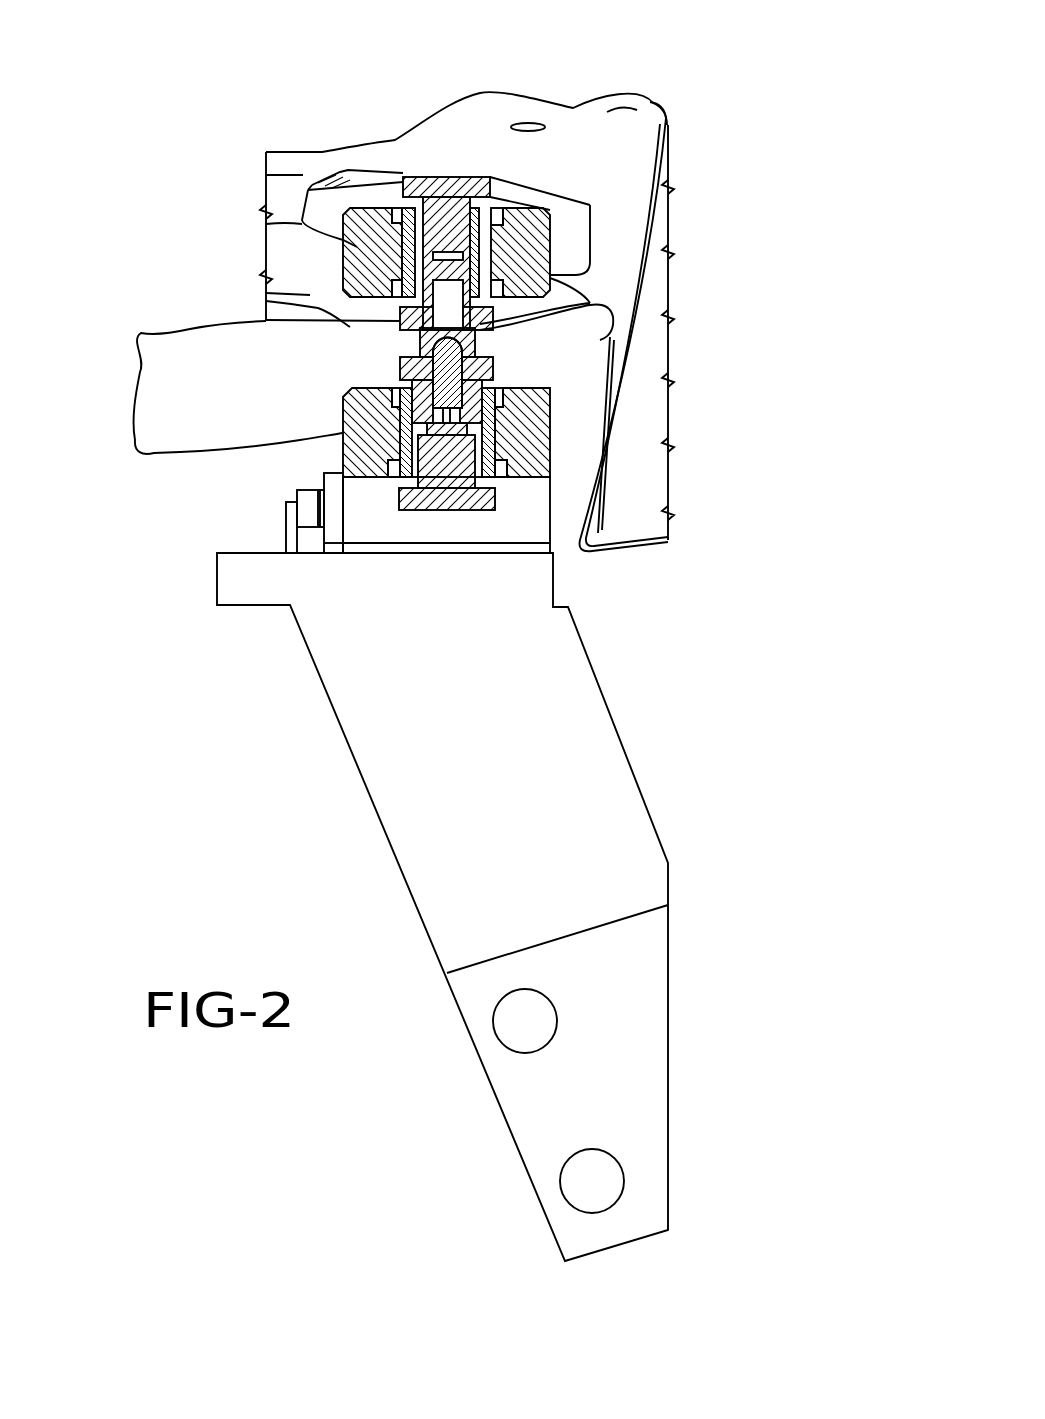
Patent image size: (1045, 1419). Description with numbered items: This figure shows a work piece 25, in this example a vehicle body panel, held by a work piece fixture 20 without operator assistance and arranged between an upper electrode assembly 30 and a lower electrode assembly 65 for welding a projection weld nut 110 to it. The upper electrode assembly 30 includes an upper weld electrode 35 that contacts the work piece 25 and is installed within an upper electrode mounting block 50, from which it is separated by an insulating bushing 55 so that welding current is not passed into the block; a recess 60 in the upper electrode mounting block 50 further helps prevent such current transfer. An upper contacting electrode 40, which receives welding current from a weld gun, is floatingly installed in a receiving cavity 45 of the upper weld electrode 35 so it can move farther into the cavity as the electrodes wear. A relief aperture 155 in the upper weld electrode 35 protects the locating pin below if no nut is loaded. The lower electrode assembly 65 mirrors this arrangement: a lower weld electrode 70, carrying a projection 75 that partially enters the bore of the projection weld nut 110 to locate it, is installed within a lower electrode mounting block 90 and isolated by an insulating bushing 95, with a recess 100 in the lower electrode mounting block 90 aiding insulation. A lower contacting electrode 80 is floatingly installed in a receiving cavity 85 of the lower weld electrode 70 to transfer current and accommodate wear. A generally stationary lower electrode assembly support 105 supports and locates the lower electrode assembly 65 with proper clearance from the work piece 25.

The work piece fixture 20 is at (167, 383).
The work piece 25 is at (642, 130).
The upper electrode assembly 30 is at (508, 165).
The upper weld electrode 35 is at (480, 320).
The upper contacting electrode 40 is at (430, 183).
The receiving cavity 45 is at (433, 255).
The upper electrode mounting block 50 is at (535, 223).
The insulating bushing 55 is at (400, 212).
The recess 60 is at (390, 282).
The lower electrode assembly 65 is at (328, 402).
The lower weld electrode 70 is at (437, 370).
The projection 75 is at (447, 370).
The lower contacting electrode 80 is at (457, 495).
The receiving cavity 85 is at (437, 428).
The lower electrode mounting block 90 is at (535, 453).
The insulating bushing 95 is at (490, 433).
The recess 100 is at (500, 393).
The lower electrode assembly support 105 is at (590, 758).
The projection weld nut 110 is at (490, 338).
The relief aperture 155 is at (442, 310).